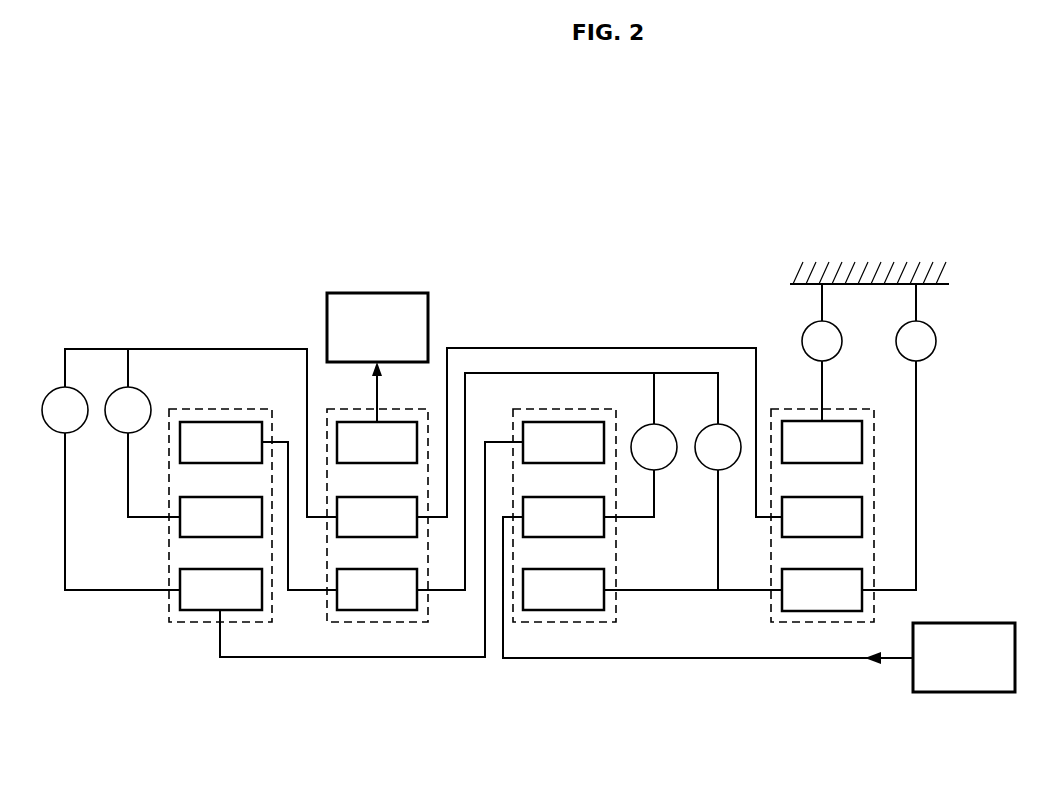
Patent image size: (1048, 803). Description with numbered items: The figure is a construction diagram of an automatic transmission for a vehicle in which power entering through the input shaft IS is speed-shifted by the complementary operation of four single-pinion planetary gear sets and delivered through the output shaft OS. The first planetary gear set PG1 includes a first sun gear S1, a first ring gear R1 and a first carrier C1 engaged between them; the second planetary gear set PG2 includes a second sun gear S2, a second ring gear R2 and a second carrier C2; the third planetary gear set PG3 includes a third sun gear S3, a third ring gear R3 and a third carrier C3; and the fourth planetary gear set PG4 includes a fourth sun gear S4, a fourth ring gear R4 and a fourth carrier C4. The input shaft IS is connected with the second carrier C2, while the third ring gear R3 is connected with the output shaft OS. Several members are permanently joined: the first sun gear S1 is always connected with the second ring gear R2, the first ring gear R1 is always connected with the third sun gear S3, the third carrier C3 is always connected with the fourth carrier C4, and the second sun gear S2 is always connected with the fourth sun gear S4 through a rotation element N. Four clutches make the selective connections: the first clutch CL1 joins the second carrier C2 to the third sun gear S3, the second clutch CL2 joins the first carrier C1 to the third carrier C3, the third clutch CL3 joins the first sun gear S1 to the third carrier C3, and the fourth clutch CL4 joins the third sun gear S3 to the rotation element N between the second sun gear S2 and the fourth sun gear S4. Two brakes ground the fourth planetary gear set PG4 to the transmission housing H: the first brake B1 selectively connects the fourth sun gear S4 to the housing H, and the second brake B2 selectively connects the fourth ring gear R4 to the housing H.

The first planetary gear set PG1 is at (203, 624).
The second planetary gear set PG2 is at (567, 624).
The third planetary gear set PG3 is at (380, 624).
The fourth planetary gear set PG4 is at (822, 624).
The first ring gear R1 is at (221, 442).
The first carrier C1 is at (221, 517).
The first sun gear S1 is at (221, 589).
The second ring gear R2 is at (563, 442).
The second carrier C2 is at (563, 517).
The second sun gear S2 is at (563, 589).
The third ring gear R3 is at (377, 442).
The third carrier C3 is at (377, 517).
The third sun gear S3 is at (377, 589).
The fourth ring gear R4 is at (822, 442).
The fourth carrier C4 is at (822, 517).
The fourth sun gear S4 is at (822, 590).
The first clutch CL1 is at (654, 447).
The second clutch CL2 is at (128, 410).
The third clutch CL3 is at (65, 410).
The fourth clutch CL4 is at (718, 447).
The first brake B1 is at (916, 341).
The second brake B2 is at (822, 341).
The transmission housing H is at (860, 262).
The output shaft OS is at (376, 292).
The input shaft IS is at (962, 694).
The rotation element N is at (680, 593).